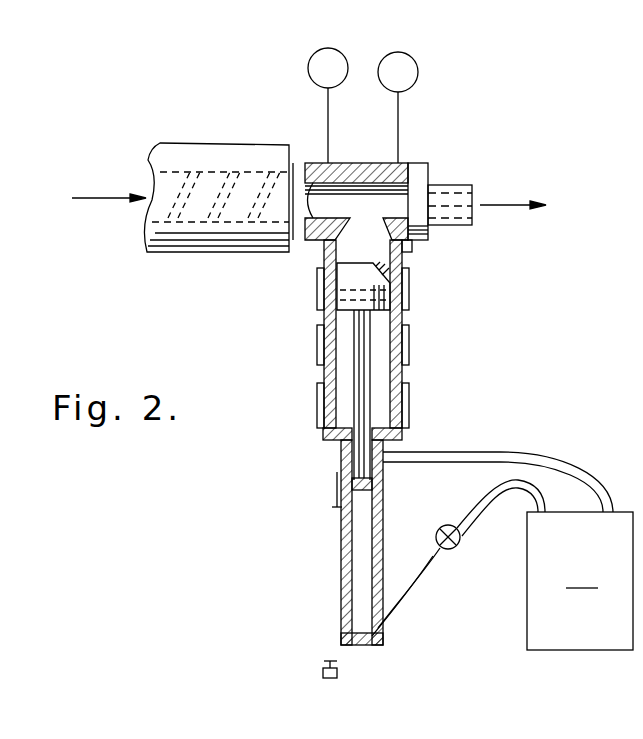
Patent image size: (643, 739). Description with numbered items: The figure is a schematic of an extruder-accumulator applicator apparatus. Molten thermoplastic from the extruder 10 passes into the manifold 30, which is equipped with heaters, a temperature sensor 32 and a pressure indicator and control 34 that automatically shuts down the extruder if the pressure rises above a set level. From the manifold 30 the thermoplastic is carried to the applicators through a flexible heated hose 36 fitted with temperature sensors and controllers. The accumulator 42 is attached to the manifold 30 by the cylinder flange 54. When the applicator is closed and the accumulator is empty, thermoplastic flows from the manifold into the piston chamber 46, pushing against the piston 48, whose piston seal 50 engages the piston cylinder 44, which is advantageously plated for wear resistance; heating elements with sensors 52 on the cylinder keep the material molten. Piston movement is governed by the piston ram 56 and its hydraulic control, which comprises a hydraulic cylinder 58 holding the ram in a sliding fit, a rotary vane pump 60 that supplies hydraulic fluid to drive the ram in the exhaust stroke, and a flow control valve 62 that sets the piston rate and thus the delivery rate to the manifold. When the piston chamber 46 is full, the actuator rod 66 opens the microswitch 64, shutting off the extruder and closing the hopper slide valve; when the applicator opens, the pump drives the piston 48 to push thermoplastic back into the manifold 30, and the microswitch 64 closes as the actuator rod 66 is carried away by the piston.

The extruder 10 is at (200, 143).
The manifold 30 is at (408, 163).
The temperature sensor 32 is at (323, 49).
The pressure indicator and control 34 is at (400, 53).
The flexible heated hose 36 is at (513, 173).
The accumulator 42 is at (350, 303).
The piston cylinder 44 is at (326, 373).
The piston chamber 46 is at (365, 252).
The piston 48 is at (352, 275).
The piston seal 50 is at (350, 293).
The heating elements with sensors 52 is at (409, 350).
The cylinder flange 54 is at (406, 248).
The piston ram 56 is at (367, 400).
The hydraulic cylinder 58 is at (360, 553).
The rotary vane pump 60 is at (502, 551).
The flow control valve 62 is at (453, 550).
The microswitch 64 is at (324, 676).
The actuator rod 66 is at (337, 480).